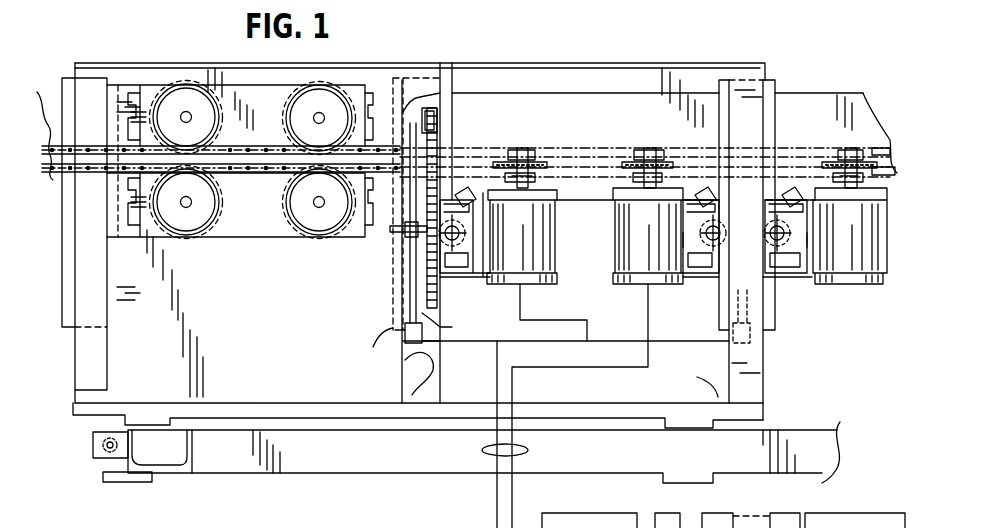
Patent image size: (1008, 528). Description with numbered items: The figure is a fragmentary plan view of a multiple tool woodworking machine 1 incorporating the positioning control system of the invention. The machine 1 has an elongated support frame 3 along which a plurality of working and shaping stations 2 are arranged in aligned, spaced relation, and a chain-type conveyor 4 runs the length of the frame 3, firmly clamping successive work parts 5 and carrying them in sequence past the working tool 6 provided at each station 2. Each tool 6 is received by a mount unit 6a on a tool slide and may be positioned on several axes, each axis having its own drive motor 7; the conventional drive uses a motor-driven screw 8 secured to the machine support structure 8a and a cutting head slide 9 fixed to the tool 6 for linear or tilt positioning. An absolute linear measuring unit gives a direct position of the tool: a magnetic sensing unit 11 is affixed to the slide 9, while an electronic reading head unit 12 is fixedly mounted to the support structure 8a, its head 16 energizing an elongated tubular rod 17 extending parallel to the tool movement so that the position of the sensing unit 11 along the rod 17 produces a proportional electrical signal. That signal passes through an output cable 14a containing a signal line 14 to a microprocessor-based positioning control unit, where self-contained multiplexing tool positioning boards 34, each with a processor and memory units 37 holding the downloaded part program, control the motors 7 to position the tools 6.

The multiple tool woodworking machine 1 is at (778, 375).
The working and shaping stations 2 is at (290, 203).
The elongated support frame 3 is at (417, 378).
The conveyor 4 is at (52, 180).
The work part 5 is at (46, 136).
The working tool 6 is at (200, 237).
The mount unit 6a is at (537, 178).
The drive motor 7 is at (430, 112).
The motor-driven screw 8 is at (473, 225).
The machine support structure 8a is at (414, 363).
The cutting head slide 9 is at (450, 277).
The sensing unit 11 is at (408, 236).
The electronic reading head unit 12 is at (404, 255).
The signal line 14 is at (477, 344).
The output cable 14a is at (530, 447).
The head 16 is at (457, 333).
The elongated tubular rod 17 is at (408, 285).
The multiplexing tool positioning boards 34 is at (645, 516).
The memory units 37 is at (608, 515).